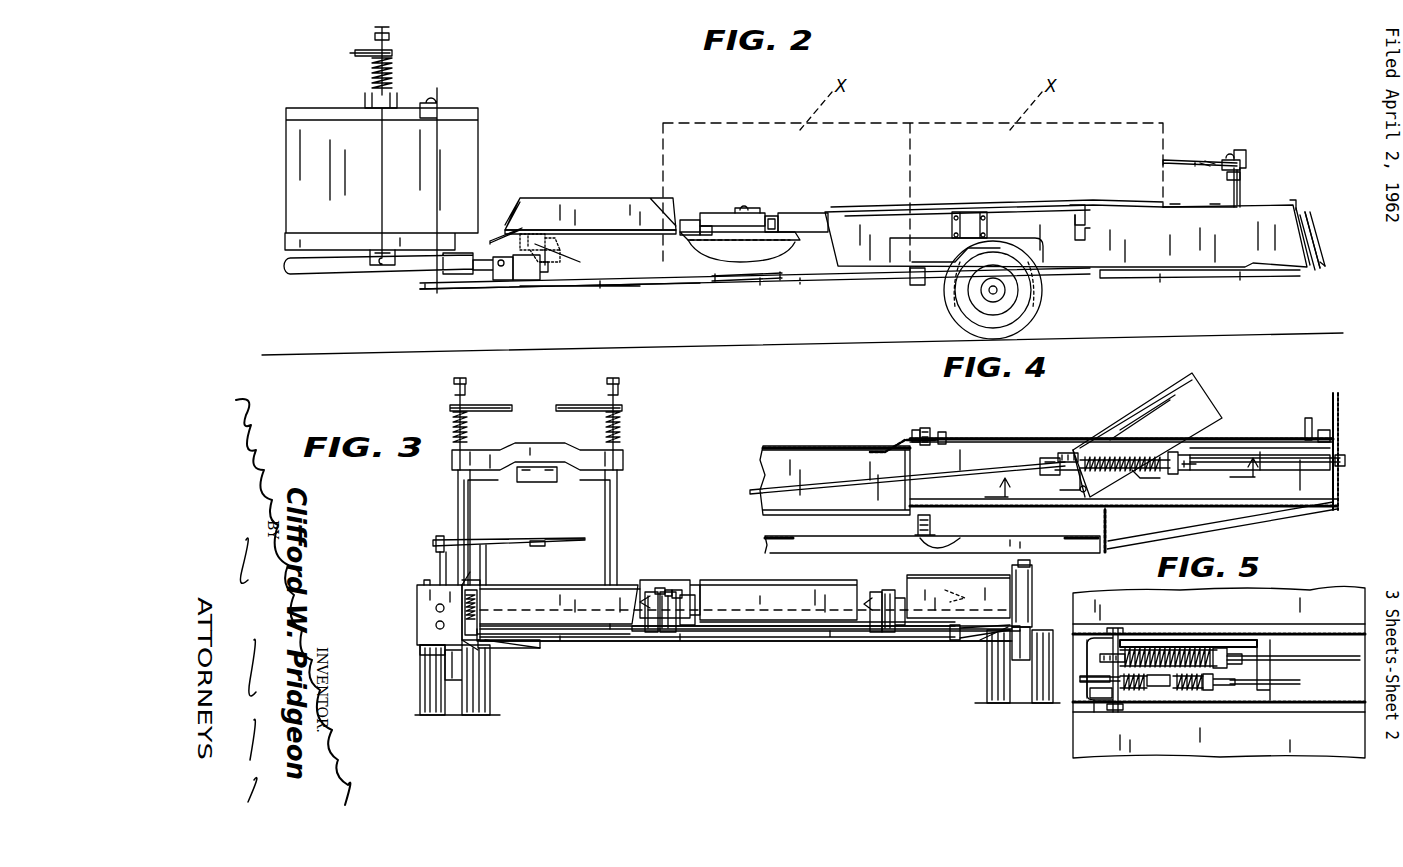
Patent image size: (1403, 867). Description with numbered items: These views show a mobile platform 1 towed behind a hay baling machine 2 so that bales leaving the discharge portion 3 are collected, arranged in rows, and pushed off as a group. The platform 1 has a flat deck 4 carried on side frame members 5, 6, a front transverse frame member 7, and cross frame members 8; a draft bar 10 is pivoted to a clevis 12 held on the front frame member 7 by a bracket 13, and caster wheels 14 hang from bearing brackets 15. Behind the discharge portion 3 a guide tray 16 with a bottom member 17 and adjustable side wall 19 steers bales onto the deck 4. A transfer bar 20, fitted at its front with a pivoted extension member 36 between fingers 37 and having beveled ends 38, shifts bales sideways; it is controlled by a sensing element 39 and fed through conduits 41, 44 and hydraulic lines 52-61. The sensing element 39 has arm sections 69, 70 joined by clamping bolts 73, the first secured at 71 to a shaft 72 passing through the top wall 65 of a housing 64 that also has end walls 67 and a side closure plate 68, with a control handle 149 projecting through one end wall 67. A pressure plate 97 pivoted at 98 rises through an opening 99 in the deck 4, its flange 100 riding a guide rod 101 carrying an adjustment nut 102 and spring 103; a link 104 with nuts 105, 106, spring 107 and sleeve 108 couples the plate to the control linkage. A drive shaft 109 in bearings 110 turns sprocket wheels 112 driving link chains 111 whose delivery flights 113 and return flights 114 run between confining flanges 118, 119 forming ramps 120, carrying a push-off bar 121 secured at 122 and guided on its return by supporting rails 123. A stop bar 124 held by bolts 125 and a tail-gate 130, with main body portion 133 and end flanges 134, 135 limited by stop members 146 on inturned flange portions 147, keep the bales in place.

In FIG. 2, the mobile platform 1 is at (856, 185).
In FIG. 2, the hay baling machine 2 is at (292, 180).
In FIG. 3, the hay baling machine 2 is at (627, 482).
In FIG. 2, the discharge portion 3 is at (300, 203).
In FIG. 3, the discharge portion 3 is at (618, 522).
In FIG. 2, the deck 4 is at (712, 248).
In FIG. 3, the deck 4 is at (645, 598).
In FIG. 4, the deck 4 is at (808, 448).
In FIG. 5, the deck 4 is at (1312, 583).
In FIG. 2, the side frame member 5 is at (744, 262).
In FIG. 3, the side frame member 5 is at (1024, 590).
In FIG. 4, the side frame member 5 is at (1350, 400).
In FIG. 5, the side frame member 5 is at (1075, 723).
In FIG. 2, the side frame member 6 is at (645, 268).
In FIG. 3, the side frame member 6 is at (434, 609).
In FIG. 2, the front transverse frame member 7 is at (560, 242).
In FIG. 3, the front transverse frame member 7 is at (700, 610).
In FIG. 3, the cross frame members 8 is at (583, 642).
In FIG. 4, the cross frame members 8 is at (770, 502).
In FIG. 5, the cross frame members 8 is at (1316, 632).
In FIG. 2, the draft bar 10 is at (403, 272).
In FIG. 2, the clevis 12 is at (500, 280).
In FIG. 2, the bracket 13 is at (525, 281).
In FIG. 2, the caster wheels 14 is at (1042, 302).
In FIG. 3, the caster wheels 14 is at (470, 718).
In FIG. 2, the bearing brackets 15 is at (990, 212).
In FIG. 2, the bale receiving guide tray 16 is at (612, 198).
In FIG. 3, the bale receiving guide tray 16 is at (482, 568).
In FIG. 2, the bottom member 17 is at (503, 236).
In FIG. 2, the side wall 19 is at (592, 197).
In FIG. 3, the side wall 19 is at (478, 575).
In FIG. 2, the transfer bar 20 is at (810, 212).
In FIG. 3, the transfer bar 20 is at (485, 582).
In FIG. 2, the extension member 36 is at (718, 212).
In FIG. 2, the fingers 37 is at (762, 208).
In FIG. 2, the beveled ends 38 is at (775, 215).
In FIG. 2, the bale sensing element 39 is at (1228, 152).
In FIG. 3, the bale sensing element 39 is at (498, 534).
In FIG. 2, the conduit 41 is at (674, 284).
In FIG. 2, the conduit 44 is at (930, 270).
In FIG. 2, the return line and fluid motor conduit 52-61 is at (780, 280).
In FIG. 2, the protective housing 64 is at (1175, 205).
In FIG. 3, the protective housing 64 is at (412, 594).
In FIG. 2, the top wall 65 is at (1275, 204).
In FIG. 3, the top wall 65 is at (420, 582).
In FIG. 2, the end walls 67 is at (1090, 238).
In FIG. 3, the end walls 67 is at (422, 648).
In FIG. 2, the side closure plate 68 is at (1222, 238).
In FIG. 3, the side closure plate 68 is at (434, 626).
In FIG. 2, the arm section 69 is at (1244, 155).
In FIG. 3, the arm section 69 is at (482, 540).
In FIG. 2, the arm section 70 is at (1182, 162).
In FIG. 3, the arm section 70 is at (560, 538).
In FIG. 2, the securing connection 71 is at (1228, 176).
In FIG. 3, the securing connection 71 is at (443, 534).
In FIG. 2, the shaft 72 is at (1243, 185).
In FIG. 3, the shaft 72 is at (432, 566).
In FIG. 2, the clamping bolts 73 is at (1200, 160).
In FIG. 3, the clamping bolts 73 is at (536, 540).
In FIG. 3, the pressure plate 97 is at (965, 578).
In FIG. 4, the pressure plate 97 is at (1202, 395).
In FIG. 5, the pressure plate 97 is at (1200, 646).
In FIG. 4, the pivotal mounting 98 is at (1090, 490).
In FIG. 5, the pivotal mounting 98 is at (1118, 628).
In FIG. 4, the opening 99 is at (1228, 436).
In FIG. 5, the opening 99 is at (1270, 672).
In FIG. 4, the transverse flange 100 is at (1068, 480).
In FIG. 5, the transverse flange 100 is at (1125, 690).
In FIG. 4, the guide rod 101 is at (1305, 465).
In FIG. 5, the guide rod 101 is at (1335, 662).
In FIG. 4, the adjustment nut 102 is at (1182, 472).
In FIG. 5, the adjustment nut 102 is at (1225, 650).
In FIG. 4, the coil compression spring 103 is at (1140, 474).
In FIG. 5, the coil compression spring 103 is at (1170, 648).
In FIG. 4, the link 104 is at (860, 484).
In FIG. 5, the link 104 is at (1085, 680).
In FIG. 4, the washer-equipped nut 105 is at (1068, 450).
In FIG. 5, the washer-equipped nut 105 is at (1095, 700).
In FIG. 4, the washer-equipped nut 106 is at (1173, 450).
In FIG. 5, the washer-equipped nut 106 is at (1210, 692).
In FIG. 4, the coil compression spring 107 is at (1125, 456).
In FIG. 5, the coil compression spring 107 is at (1150, 648).
In FIG. 5, the sleeve 108 is at (1165, 690).
In FIG. 3, the drive shaft 109 is at (684, 628).
In FIG. 3, the bearings 110 is at (652, 634).
In FIG. 3, the link chains 111 is at (670, 588).
In FIG. 4, the link chains 111 is at (928, 426).
In FIG. 3, the sprocket wheels 112 is at (668, 634).
In FIG. 4, the upper delivery flight 113 is at (935, 425).
In FIG. 4, the lower return flight 114 is at (915, 525).
In FIG. 3, the confining flanges 118 is at (663, 587).
In FIG. 4, the confining flanges 118 is at (915, 428).
In FIG. 3, the confining flanges 119 is at (680, 590).
In FIG. 4, the confining flanges 119 is at (948, 430).
In FIG. 2, the ramps 120 is at (704, 225).
In FIG. 3, the ramps 120 is at (652, 592).
In FIG. 4, the ramps 120 is at (888, 448).
In FIG. 3, the push-off bar 121 is at (784, 636).
In FIG. 4, the bolted connection 122 is at (985, 536).
In FIG. 2, the supporting rails 123 is at (1220, 272).
In FIG. 3, the supporting rails 123 is at (545, 650).
In FIG. 2, the stop bar 124 is at (688, 219).
In FIG. 3, the stop bar 124 is at (1032, 570).
In FIG. 4, the stop bar 124 is at (1308, 416).
In FIG. 4, the bolts 125 is at (1333, 395).
In FIG. 2, the tail-gate 130 is at (1310, 218).
In FIG. 3, the tail-gate 130 is at (792, 585).
In FIG. 3, the main body portion 133 is at (735, 590).
In FIG. 3, the end flange 134 is at (962, 598).
In FIG. 2, the end flange 135 is at (1305, 208).
In FIG. 3, the end flange 135 is at (480, 604).
In FIG. 3, the stop members 146 is at (495, 645).
In FIG. 3, the inturned flange portions 147 is at (470, 647).
In FIG. 2, the control handle 149 is at (1075, 205).